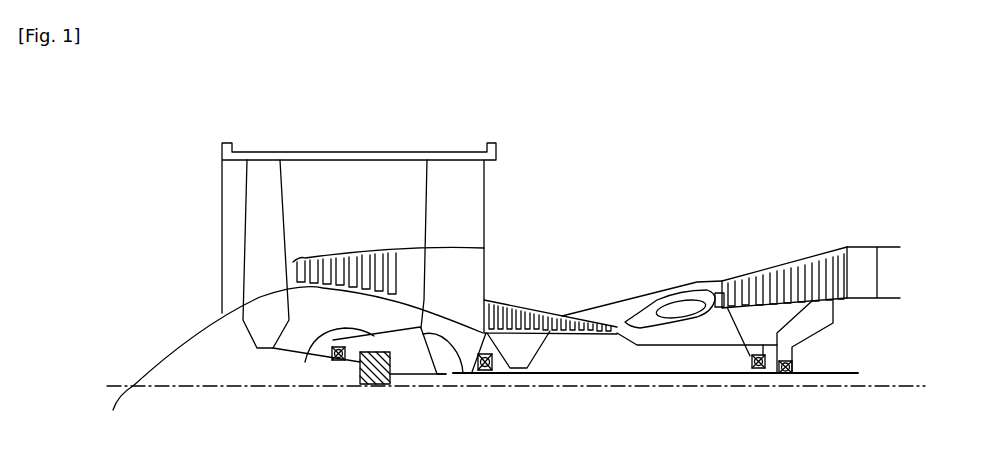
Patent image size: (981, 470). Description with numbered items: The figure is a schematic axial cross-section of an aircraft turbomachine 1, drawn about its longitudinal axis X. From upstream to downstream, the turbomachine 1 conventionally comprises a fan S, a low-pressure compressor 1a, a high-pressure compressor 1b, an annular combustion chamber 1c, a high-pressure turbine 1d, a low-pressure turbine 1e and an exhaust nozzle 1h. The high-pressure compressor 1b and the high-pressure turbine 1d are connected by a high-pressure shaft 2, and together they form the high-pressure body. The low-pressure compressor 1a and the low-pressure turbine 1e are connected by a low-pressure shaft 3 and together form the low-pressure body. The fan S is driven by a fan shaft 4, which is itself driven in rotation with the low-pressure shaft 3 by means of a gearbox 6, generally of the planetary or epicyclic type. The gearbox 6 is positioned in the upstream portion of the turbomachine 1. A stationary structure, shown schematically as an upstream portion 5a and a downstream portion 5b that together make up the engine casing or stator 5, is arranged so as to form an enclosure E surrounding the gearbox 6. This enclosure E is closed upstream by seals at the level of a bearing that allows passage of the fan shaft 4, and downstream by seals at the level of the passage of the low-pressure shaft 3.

The turbomachine 1 is at (598, 185).
The low-pressure compressor 1a is at (320, 260).
The high-pressure compressor 1b is at (518, 303).
The annular combustion chamber 1c is at (662, 305).
The high-pressure turbine 1d is at (720, 295).
The low-pressure turbine 1e is at (832, 251).
The exhaust nozzle 1h is at (878, 268).
The fan S is at (247, 215).
The high-pressure shaft 2 is at (665, 347).
The low-pressure shaft 3 is at (578, 376).
The fan shaft 4 is at (318, 363).
The engine casing or stator 5 is at (410, 331).
The upstream portion 5a is at (325, 343).
The downstream portion 5b is at (462, 373).
The gearbox 6 is at (375, 367).
The enclosure E is at (407, 358).
The engine axis X is at (514, 411).